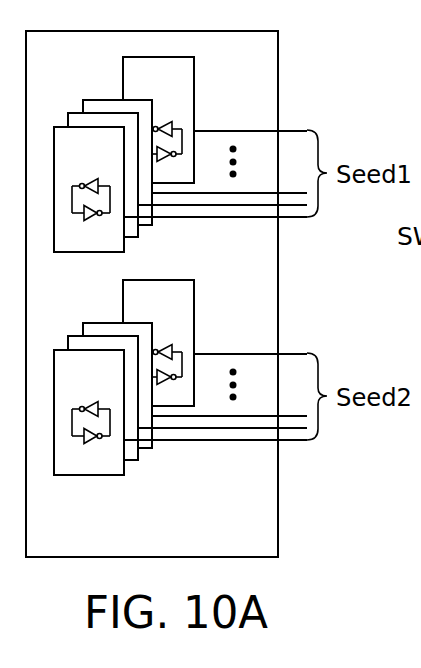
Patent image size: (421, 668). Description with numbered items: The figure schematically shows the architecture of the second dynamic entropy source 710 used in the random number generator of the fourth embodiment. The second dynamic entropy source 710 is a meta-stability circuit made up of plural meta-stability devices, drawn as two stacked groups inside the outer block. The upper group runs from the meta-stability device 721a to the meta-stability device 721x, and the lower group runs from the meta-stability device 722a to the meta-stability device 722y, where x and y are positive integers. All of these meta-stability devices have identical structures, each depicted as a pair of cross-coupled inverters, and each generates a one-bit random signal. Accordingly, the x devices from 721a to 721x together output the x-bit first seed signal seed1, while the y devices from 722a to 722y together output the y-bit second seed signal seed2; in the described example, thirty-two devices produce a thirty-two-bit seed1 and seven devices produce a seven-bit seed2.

The second dynamic entropy source 710 is at (228, 544).
The meta-stability device 721x is at (190, 87).
The meta-stability device 721a is at (118, 163).
The meta-stability device 722y is at (190, 310).
The meta-stability device 722a is at (118, 386).